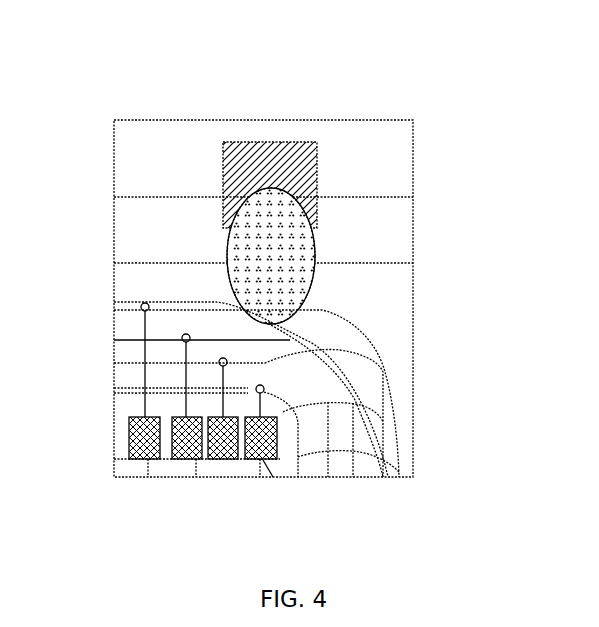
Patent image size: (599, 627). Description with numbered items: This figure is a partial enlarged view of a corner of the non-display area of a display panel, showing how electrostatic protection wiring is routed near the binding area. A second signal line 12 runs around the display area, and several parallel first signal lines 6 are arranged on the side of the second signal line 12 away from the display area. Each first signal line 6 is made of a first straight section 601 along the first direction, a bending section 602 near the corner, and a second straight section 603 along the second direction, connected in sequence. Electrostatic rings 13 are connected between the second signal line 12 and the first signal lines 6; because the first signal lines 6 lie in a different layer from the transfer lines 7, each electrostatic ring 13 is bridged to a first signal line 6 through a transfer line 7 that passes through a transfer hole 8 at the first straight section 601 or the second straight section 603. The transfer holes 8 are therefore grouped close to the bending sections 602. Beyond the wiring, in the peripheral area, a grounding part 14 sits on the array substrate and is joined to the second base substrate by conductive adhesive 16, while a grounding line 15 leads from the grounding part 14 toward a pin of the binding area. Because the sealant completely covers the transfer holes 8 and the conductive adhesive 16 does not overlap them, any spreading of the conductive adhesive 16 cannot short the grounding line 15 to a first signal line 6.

The first signal line 6 is at (329, 389).
The first straight section 601 is at (383, 369).
The bending section 602 is at (383, 422).
The second straight section 603 is at (402, 455).
The transfer line 7 is at (226, 417).
The transfer hole 8 is at (141, 305).
The second signal line 12 is at (129, 458).
The electrostatic ring 13 is at (148, 477).
The grounding part 14 is at (290, 141).
The grounding line 15 is at (168, 196).
The conductive adhesive 16 is at (316, 240).